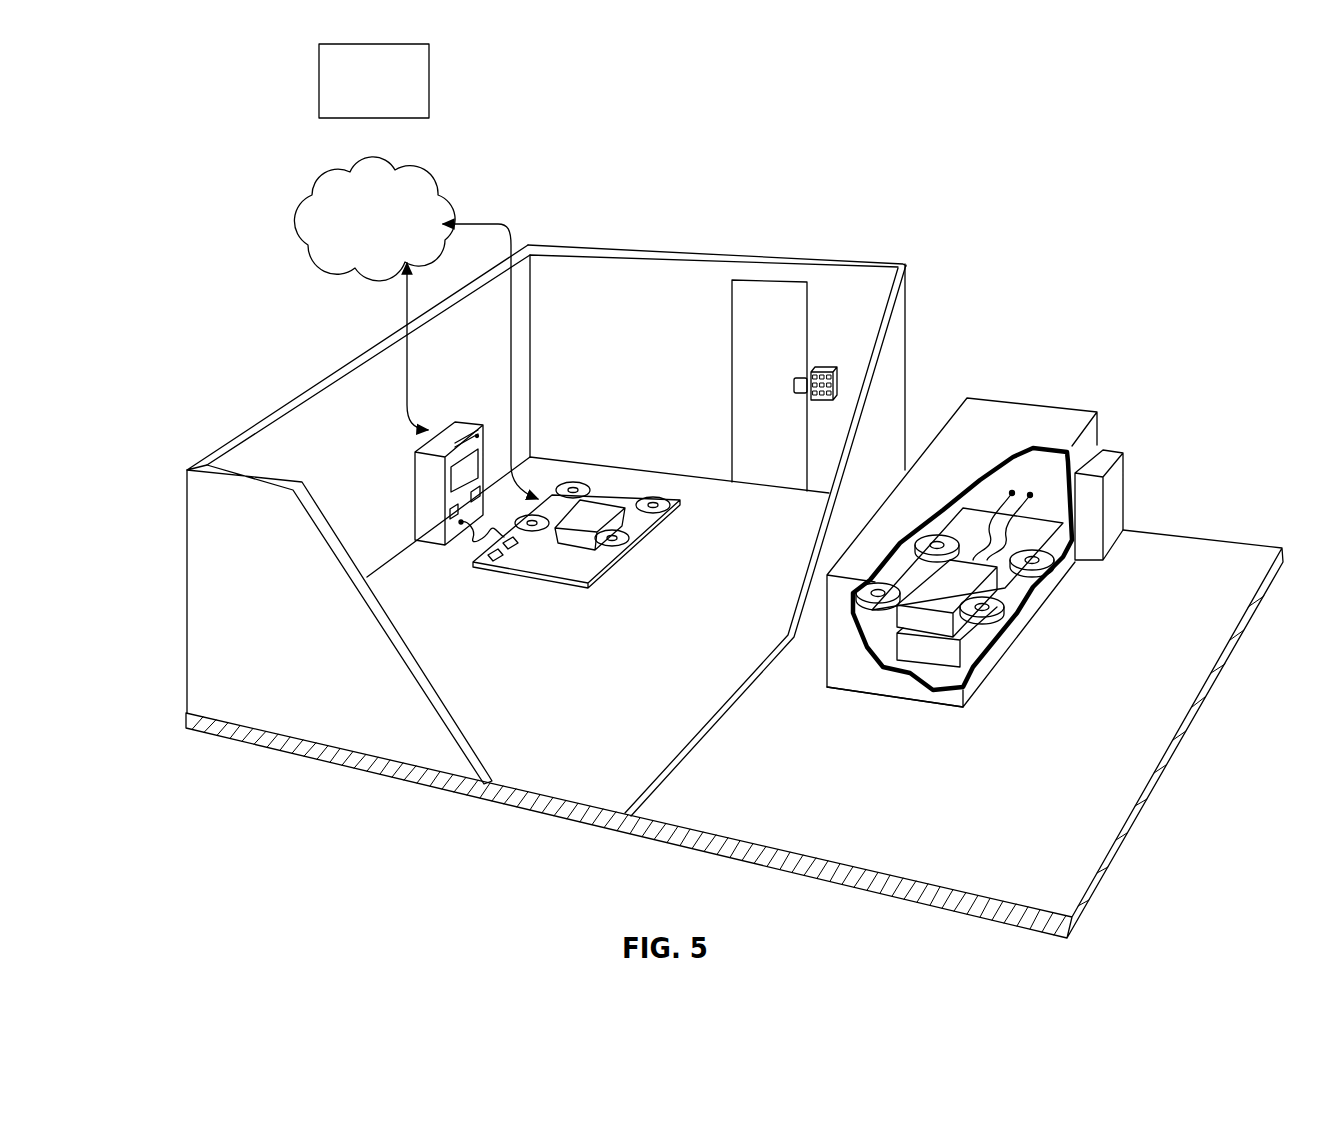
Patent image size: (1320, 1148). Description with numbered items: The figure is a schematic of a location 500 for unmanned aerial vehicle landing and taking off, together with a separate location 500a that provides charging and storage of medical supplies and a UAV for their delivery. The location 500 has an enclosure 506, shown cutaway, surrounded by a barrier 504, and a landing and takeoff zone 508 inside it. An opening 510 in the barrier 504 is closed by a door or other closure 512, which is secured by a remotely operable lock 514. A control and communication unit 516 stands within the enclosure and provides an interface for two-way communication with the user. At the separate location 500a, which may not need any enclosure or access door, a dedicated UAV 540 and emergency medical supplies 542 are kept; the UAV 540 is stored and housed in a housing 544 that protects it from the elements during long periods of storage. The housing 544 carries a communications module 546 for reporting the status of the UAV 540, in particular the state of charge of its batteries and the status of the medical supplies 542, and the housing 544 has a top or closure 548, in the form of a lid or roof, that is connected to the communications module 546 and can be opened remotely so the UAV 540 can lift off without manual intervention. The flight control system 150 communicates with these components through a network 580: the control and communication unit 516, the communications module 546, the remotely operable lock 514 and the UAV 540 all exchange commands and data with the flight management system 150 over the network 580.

The location 500 is at (170, 133).
The separate location 500a is at (890, 828).
The flight control system 150 is at (390, 93).
The network 580 is at (389, 226).
The barrier 504 is at (611, 326).
The enclosure 506 is at (553, 755).
The landing and takeoff zone 508 is at (617, 560).
The opening 510 is at (745, 278).
The door or other closure 512 is at (770, 312).
The remotely operable lock 514 is at (836, 381).
The control and communication unit 516 is at (425, 497).
The dedicated UAV 540 is at (927, 625).
The medical supplies 542 is at (977, 638).
The housing 544 is at (848, 670).
The communications module 546 is at (1110, 530).
The top or closure 548 is at (865, 552).